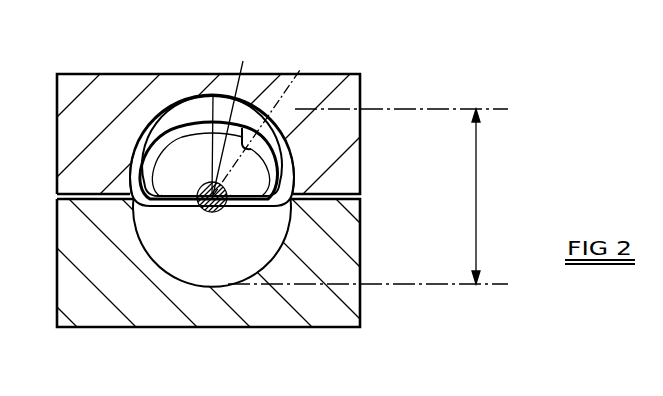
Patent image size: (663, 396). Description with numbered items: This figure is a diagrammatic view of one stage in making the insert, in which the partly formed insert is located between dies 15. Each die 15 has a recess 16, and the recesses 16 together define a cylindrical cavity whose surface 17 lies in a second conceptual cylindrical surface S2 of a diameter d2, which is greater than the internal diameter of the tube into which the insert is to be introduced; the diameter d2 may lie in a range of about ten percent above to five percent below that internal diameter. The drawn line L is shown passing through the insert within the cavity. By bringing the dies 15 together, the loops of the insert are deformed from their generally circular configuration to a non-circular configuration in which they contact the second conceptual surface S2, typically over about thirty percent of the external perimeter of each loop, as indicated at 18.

The dies 15 is at (360, 146).
The recess 16 is at (281, 146).
The surface 17 is at (131, 213).
The contact region 18 is at (212, 95).
The axis line L is at (256, 120).
The second conceptual cylindrical surface S2 is at (172, 265).
The diameter d2 is at (368, 196).